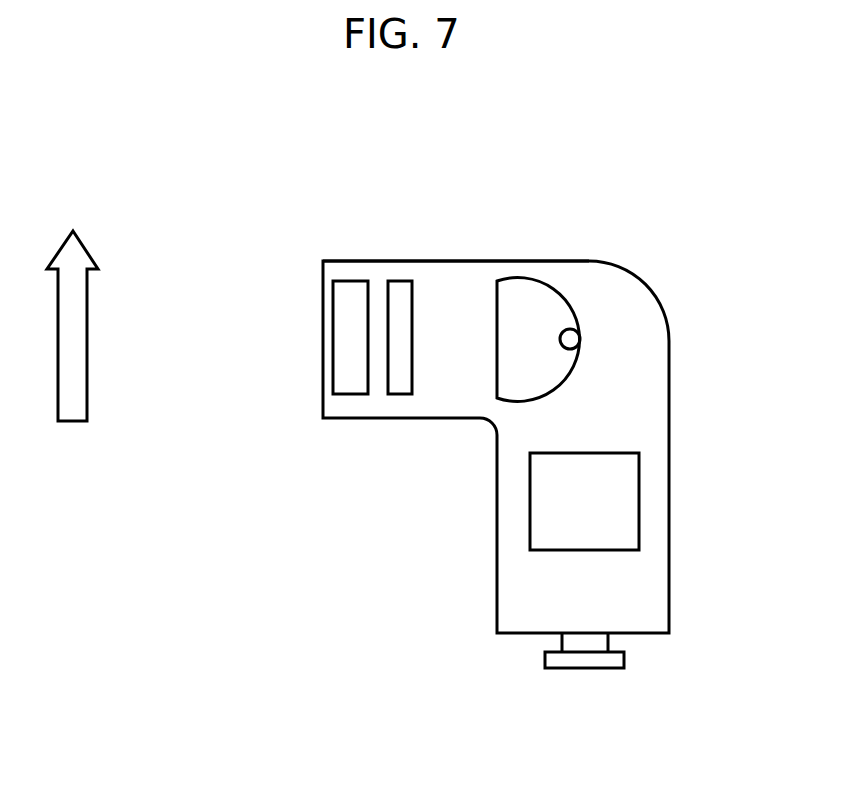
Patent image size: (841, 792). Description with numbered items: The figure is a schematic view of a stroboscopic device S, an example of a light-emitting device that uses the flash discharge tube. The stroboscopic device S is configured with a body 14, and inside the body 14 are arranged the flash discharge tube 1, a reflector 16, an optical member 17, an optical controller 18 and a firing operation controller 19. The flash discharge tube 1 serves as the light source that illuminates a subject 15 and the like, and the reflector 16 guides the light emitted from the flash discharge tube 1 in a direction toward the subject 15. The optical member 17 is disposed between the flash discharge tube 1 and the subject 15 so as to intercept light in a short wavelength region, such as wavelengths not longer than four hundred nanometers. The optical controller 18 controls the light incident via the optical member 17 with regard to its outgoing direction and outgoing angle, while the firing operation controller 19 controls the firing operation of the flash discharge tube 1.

The stroboscopic device S is at (692, 193).
The body 14 is at (464, 261).
The reflector 16 is at (538, 287).
The flash discharge tube 1 is at (567, 339).
The optical controller 18 is at (348, 394).
The optical member 17 is at (400, 394).
The firing operation controller 19 is at (530, 507).
The subject 15 is at (87, 326).